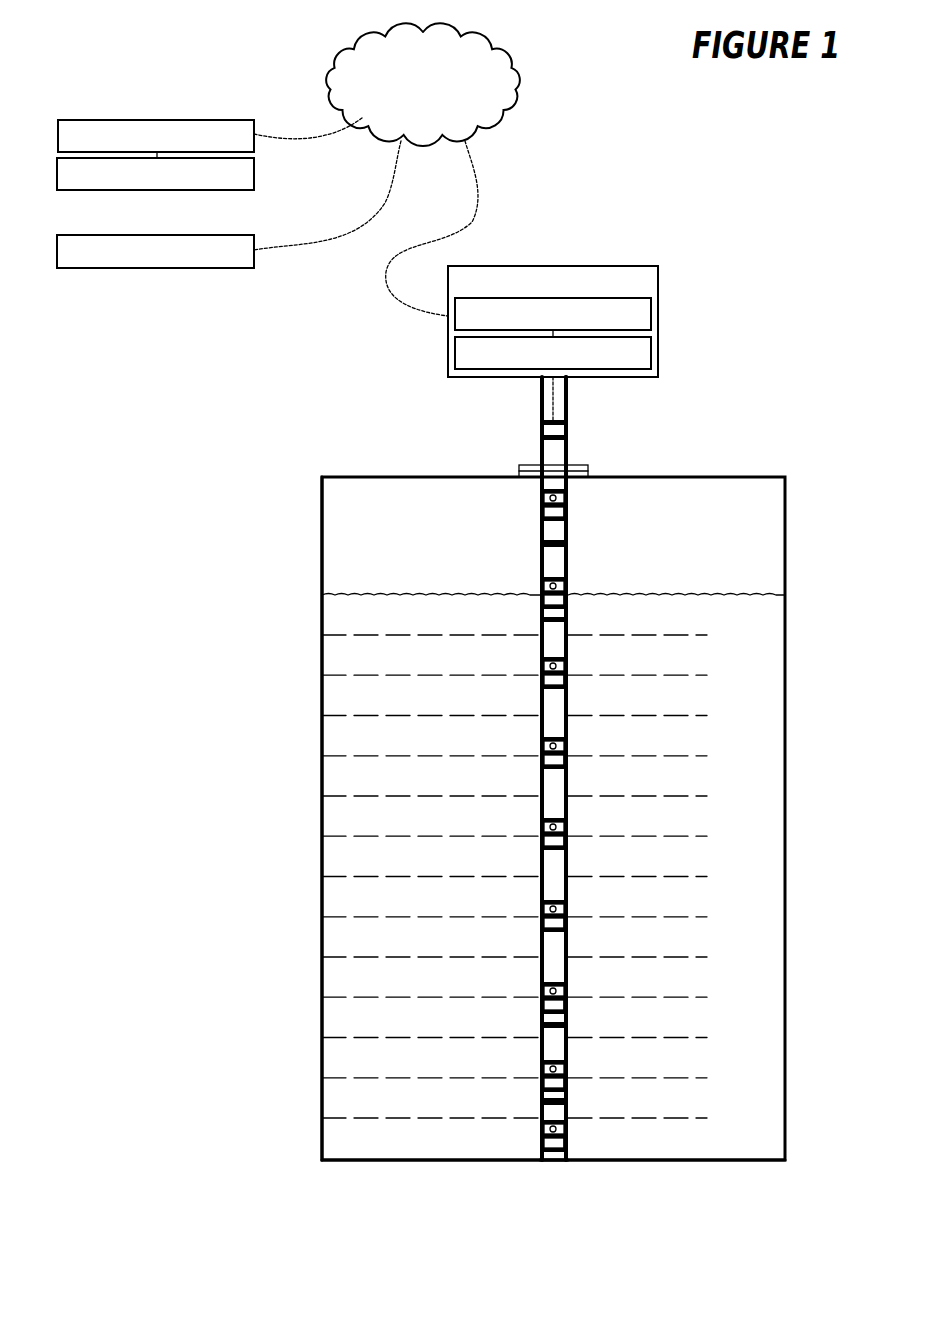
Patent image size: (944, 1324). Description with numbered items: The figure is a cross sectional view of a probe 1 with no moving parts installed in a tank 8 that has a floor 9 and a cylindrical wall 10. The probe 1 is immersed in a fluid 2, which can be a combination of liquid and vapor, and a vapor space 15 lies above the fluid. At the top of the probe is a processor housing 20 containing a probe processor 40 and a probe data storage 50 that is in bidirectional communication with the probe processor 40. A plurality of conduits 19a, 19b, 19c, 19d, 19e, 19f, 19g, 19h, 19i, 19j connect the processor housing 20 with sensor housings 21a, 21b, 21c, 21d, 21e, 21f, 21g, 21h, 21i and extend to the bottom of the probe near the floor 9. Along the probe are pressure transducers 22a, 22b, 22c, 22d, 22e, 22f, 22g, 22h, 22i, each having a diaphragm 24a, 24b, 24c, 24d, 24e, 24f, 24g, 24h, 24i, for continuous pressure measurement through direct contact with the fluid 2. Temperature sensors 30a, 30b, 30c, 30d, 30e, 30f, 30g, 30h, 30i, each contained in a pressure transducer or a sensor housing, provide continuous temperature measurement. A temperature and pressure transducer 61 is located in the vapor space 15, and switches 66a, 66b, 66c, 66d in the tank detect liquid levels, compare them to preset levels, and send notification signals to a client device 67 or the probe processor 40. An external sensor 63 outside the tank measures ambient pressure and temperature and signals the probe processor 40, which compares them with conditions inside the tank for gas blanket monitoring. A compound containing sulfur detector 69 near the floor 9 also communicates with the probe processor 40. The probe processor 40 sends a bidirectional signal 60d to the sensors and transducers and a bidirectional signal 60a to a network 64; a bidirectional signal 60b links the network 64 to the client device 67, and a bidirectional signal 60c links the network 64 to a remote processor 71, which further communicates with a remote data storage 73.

The probe 1 is at (549, 264).
The fluid 2 is at (350, 594).
The tank 8 is at (815, 477).
The floor 9 is at (413, 1164).
The wall 10 is at (322, 505).
The vapor space 15 is at (735, 535).
The conduit 19a is at (568, 393).
The conduit 19b is at (568, 447).
The conduit 19c is at (568, 577).
The conduit 19d is at (568, 648).
The conduit 19e is at (568, 722).
The conduit 19f is at (568, 802).
The conduit 19g is at (568, 884).
The conduit 19h is at (568, 964).
The conduit 19i is at (568, 1045).
The conduit 19j is at (568, 1118).
The processor housing 20 is at (659, 282).
The sensor housing 21a is at (566, 508).
The sensor housing 21b is at (566, 596).
The sensor housing 21c is at (566, 676).
The sensor housing 21d is at (566, 756).
The sensor housing 21e is at (566, 837).
The sensor housing 21f is at (566, 919).
The sensor housing 21g is at (566, 1001).
The sensor housing 21h is at (566, 1079).
The sensor housing 21i is at (566, 1139).
The pressure transducer 22a is at (544, 496).
The pressure transducer 22b is at (544, 584).
The pressure transducer 22c is at (544, 664).
The pressure transducer 22d is at (544, 744).
The pressure transducer 22e is at (544, 825).
The pressure transducer 22f is at (544, 907).
The pressure transducer 22g is at (544, 989).
The pressure transducer 22h is at (544, 1067).
The pressure transducer 22i is at (544, 1127).
The diaphragm 24a is at (556, 499).
The diaphragm 24b is at (556, 587).
The diaphragm 24c is at (556, 667).
The diaphragm 24d is at (556, 747).
The diaphragm 24e is at (556, 828).
The diaphragm 24f is at (556, 910).
The diaphragm 24g is at (556, 992).
The diaphragm 24h is at (556, 1070).
The diaphragm 24i is at (556, 1130).
The temperature sensor 30a is at (544, 510).
The temperature sensor 30b is at (544, 598).
The temperature sensor 30c is at (544, 678).
The temperature sensor 30d is at (544, 758).
The temperature sensor 30e is at (544, 839).
The temperature sensor 30f is at (544, 921).
The temperature sensor 30g is at (544, 1003).
The temperature sensor 30h is at (544, 1081).
The temperature sensor 30i is at (544, 1141).
The probe processor 40 is at (652, 313).
The probe data storage 50 is at (652, 357).
The bidirectional signal 60a is at (480, 178).
The bidirectional signal 60b is at (397, 172).
The bidirectional signal 60c is at (324, 143).
The bidirectional signal 60d is at (550, 392).
The temperature and pressure transducer 61 is at (540, 532).
The external sensor 63 is at (540, 432).
The network 64 is at (516, 84).
The switch 66a is at (542, 544).
The switch 66b is at (542, 621).
The switch 66c is at (542, 1103).
The switch 66d is at (542, 1026).
The client device 67 is at (57, 252).
The compound containing sulfur detector 69 is at (567, 1162).
The remote processor 71 is at (58, 137).
The remote data storage 73 is at (57, 175).